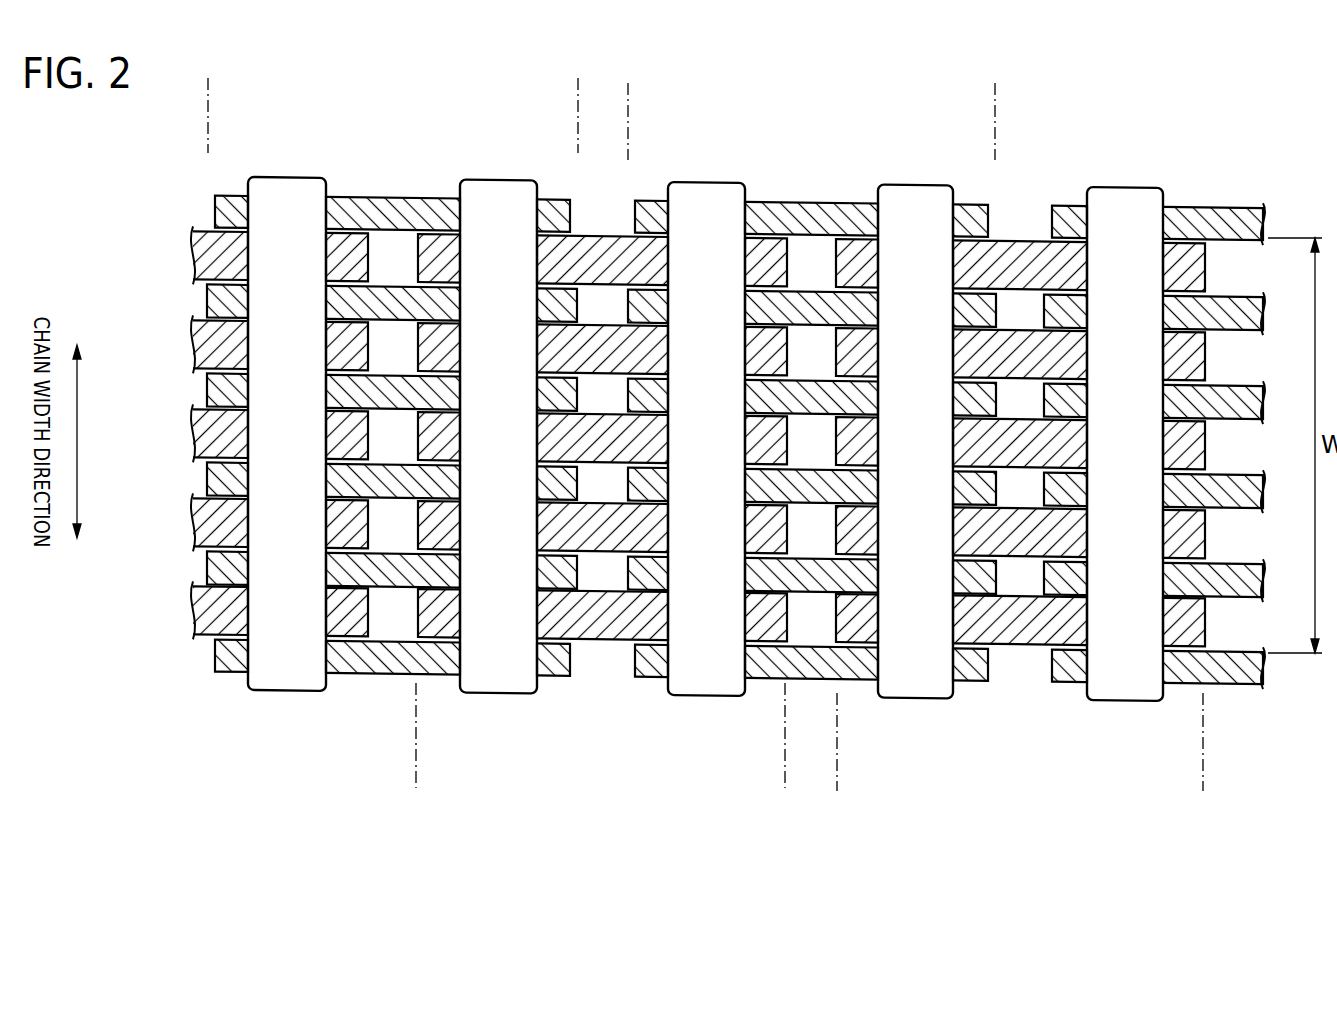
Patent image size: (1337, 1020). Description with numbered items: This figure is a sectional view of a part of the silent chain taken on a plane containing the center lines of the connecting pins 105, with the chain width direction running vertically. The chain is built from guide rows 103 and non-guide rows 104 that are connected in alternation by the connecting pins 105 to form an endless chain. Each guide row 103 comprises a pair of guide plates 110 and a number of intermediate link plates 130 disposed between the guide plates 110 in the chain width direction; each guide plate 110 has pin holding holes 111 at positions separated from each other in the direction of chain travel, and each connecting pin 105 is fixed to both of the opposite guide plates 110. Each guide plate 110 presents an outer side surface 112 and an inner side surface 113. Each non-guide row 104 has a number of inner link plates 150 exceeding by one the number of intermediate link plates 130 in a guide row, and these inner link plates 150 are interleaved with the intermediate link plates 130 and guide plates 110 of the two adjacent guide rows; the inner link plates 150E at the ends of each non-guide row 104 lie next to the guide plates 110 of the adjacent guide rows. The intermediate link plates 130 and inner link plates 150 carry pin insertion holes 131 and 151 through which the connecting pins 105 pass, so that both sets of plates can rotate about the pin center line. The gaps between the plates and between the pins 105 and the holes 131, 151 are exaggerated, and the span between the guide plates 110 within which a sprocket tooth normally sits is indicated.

The guide row 103 is at (208, 78).
The non-guide row 104 is at (785, 787).
The connecting pin 105 is at (492, 190).
The guide plate 110 is at (388, 185).
The pin holding hole 111 is at (673, 215).
The outer side surface 112 is at (233, 195).
The inner side surface 113 is at (407, 232).
The intermediate link plate 130 is at (207, 388).
The pin insertion hole 131 is at (322, 298).
The inner link plate 150 is at (603, 337).
The inner link plate located at end of non-guide row 150E is at (568, 713).
The pin insertion hole 151 is at (534, 622).